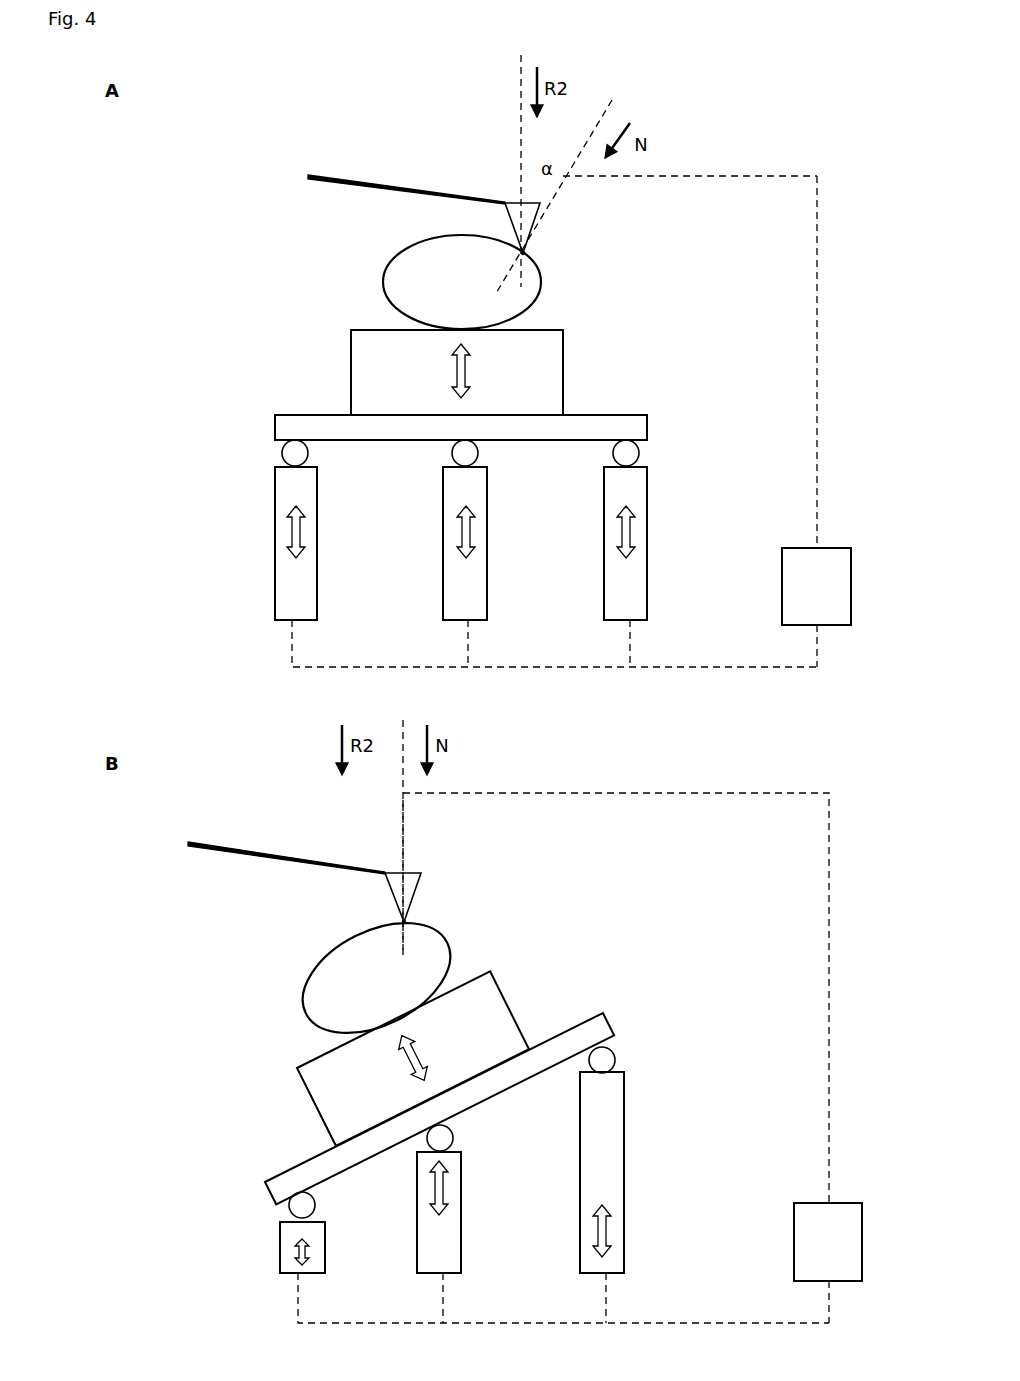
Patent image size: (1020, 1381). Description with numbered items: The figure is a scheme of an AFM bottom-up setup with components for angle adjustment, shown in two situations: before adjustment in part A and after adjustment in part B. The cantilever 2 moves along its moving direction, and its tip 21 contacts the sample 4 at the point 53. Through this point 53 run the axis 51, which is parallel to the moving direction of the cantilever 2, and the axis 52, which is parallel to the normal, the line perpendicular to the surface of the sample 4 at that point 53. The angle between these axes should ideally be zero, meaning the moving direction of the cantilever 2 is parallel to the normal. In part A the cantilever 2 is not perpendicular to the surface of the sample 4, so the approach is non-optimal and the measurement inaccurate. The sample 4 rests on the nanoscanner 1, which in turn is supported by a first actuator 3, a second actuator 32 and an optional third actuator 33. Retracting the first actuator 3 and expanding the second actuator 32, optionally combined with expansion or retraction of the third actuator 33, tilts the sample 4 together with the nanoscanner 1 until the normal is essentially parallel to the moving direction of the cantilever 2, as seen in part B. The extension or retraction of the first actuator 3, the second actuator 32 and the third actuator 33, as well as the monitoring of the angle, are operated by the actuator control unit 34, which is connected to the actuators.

The nanoscanner 1 is at (545, 363).
The cantilever 2 is at (367, 183).
The tip 21 is at (530, 210).
The first actuator 3 is at (290, 490).
The second actuator 32 is at (632, 490).
The third actuator 33 is at (470, 608).
The actuator control unit 34 is at (577, 749).
The sample 4 is at (410, 270).
The axis 51 is at (587, 146).
The axis 52 is at (402, 844).
The point 53 is at (533, 257).